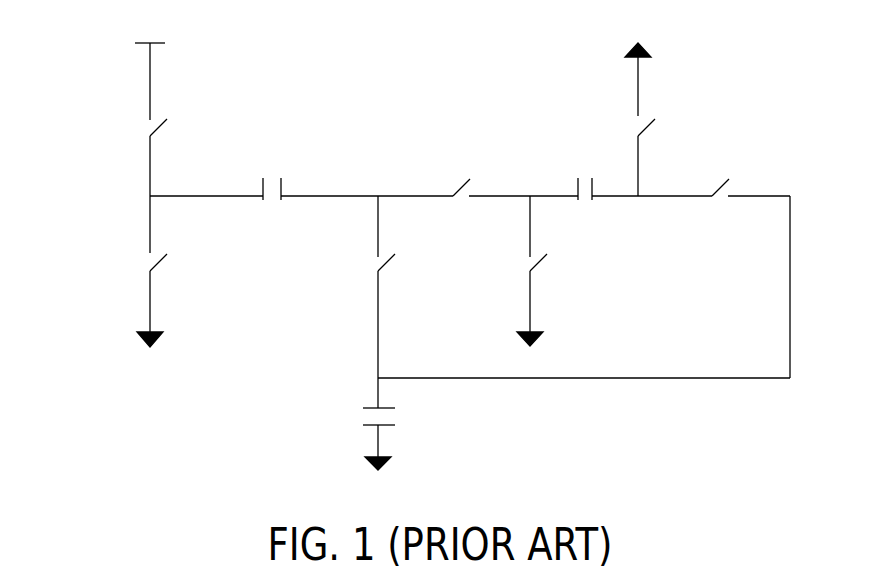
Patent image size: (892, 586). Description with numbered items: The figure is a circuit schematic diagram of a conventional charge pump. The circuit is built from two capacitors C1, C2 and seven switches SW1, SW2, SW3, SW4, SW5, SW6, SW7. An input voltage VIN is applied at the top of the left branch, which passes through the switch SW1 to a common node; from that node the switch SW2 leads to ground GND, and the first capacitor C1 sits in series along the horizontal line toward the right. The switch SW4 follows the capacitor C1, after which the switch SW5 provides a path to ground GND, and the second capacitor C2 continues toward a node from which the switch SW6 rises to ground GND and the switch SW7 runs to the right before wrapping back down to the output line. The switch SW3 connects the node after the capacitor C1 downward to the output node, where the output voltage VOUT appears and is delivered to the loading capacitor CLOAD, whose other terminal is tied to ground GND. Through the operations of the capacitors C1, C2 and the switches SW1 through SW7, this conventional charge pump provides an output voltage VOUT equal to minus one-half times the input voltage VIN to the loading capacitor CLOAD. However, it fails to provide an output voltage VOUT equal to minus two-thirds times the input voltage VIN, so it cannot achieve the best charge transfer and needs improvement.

The input voltage VIN is at (149, 61).
The switch SW1 is at (132, 150).
The switch SW2 is at (131, 264).
The switch SW3 is at (357, 287).
The switch SW4 is at (511, 169).
The switch SW5 is at (512, 264).
The switch SW6 is at (619, 126).
The switch SW7 is at (747, 169).
The capacitor C1 is at (272, 168).
The capacitor C2 is at (581, 168).
The loading capacitor CLOAD is at (334, 426).
The output voltage VOUT is at (420, 374).
The ground GND is at (394, 253).